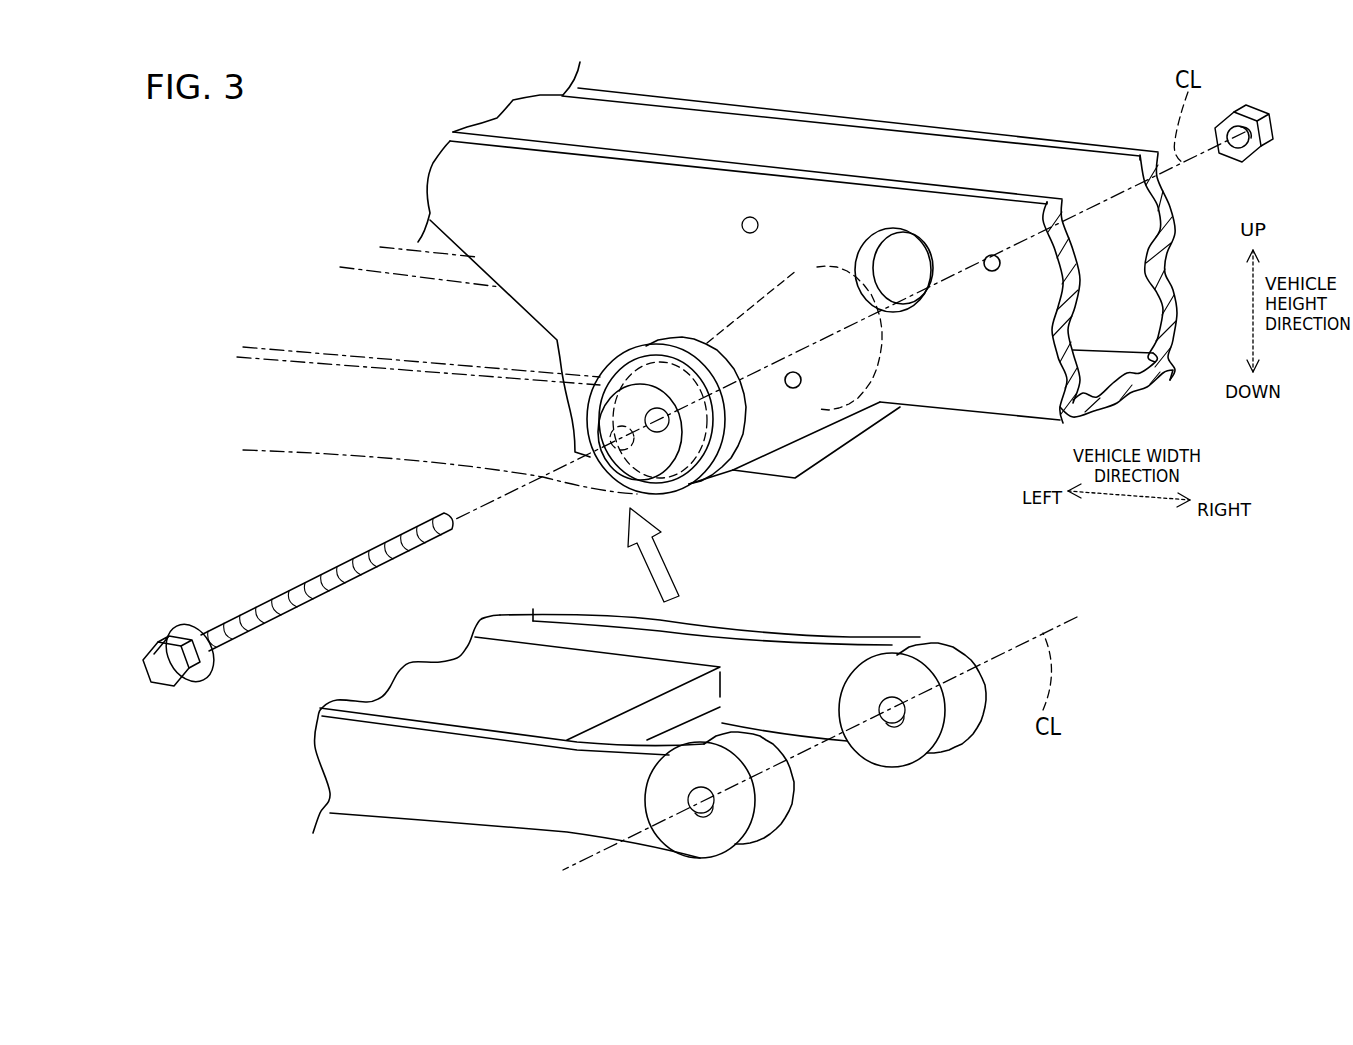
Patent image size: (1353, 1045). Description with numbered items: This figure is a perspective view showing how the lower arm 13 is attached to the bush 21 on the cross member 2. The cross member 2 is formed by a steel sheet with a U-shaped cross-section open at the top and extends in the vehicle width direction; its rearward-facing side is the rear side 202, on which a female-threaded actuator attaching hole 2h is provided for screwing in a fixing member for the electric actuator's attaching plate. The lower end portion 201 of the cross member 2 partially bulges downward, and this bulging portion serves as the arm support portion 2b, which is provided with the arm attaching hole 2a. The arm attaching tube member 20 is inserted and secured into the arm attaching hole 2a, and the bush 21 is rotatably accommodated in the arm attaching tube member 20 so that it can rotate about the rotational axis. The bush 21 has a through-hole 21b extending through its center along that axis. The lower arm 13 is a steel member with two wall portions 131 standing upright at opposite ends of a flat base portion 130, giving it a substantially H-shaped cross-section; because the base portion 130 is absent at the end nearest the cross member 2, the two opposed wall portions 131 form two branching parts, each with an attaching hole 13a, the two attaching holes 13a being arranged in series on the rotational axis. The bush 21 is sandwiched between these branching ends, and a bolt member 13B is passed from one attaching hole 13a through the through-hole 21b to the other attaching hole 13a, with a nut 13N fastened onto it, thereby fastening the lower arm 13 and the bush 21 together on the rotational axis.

The cross member 2 is at (898, 123).
The arm attaching hole 2a is at (740, 414).
The arm support portion 2b is at (752, 481).
The actuator attaching hole 2h is at (753, 233).
The arm attaching tube member 20 is at (690, 346).
The bush 21 is at (612, 408).
The through-hole 21b is at (660, 430).
The lower end portion 201 is at (847, 437).
The rear side 202 is at (977, 388).
The lower arm 13 is at (310, 453).
The attaching hole 13a is at (890, 722).
The bolt member 13B is at (160, 688).
The nut 13N is at (1272, 132).
The base portion 130 is at (590, 667).
The wall portion 131 is at (788, 640).